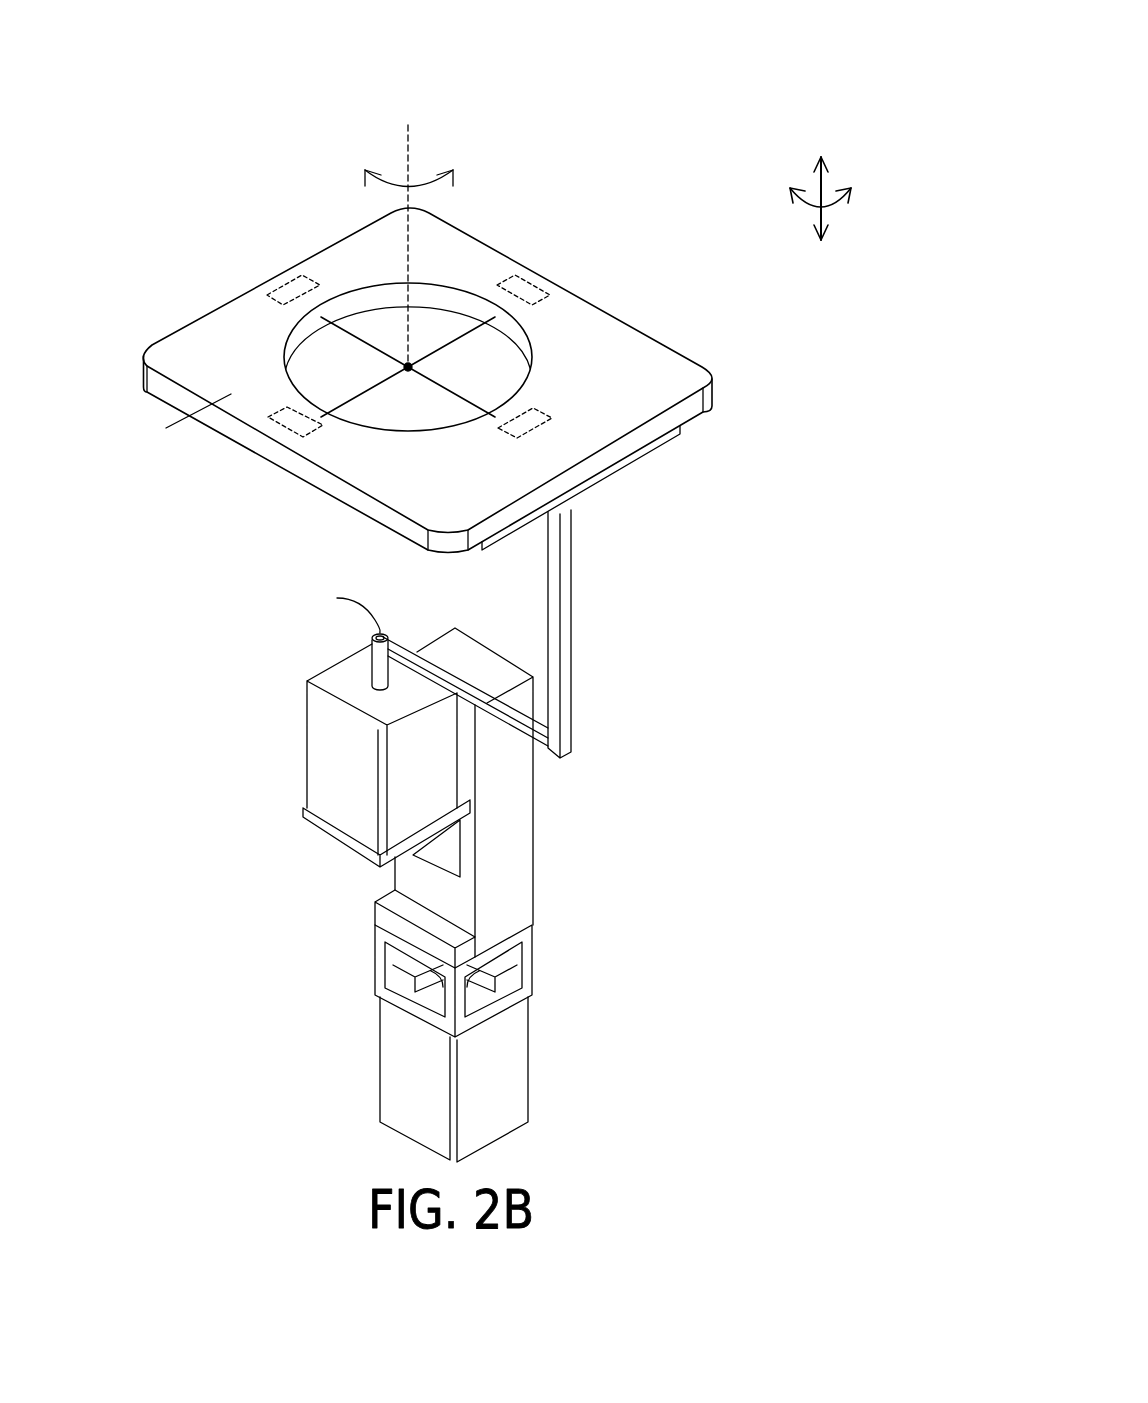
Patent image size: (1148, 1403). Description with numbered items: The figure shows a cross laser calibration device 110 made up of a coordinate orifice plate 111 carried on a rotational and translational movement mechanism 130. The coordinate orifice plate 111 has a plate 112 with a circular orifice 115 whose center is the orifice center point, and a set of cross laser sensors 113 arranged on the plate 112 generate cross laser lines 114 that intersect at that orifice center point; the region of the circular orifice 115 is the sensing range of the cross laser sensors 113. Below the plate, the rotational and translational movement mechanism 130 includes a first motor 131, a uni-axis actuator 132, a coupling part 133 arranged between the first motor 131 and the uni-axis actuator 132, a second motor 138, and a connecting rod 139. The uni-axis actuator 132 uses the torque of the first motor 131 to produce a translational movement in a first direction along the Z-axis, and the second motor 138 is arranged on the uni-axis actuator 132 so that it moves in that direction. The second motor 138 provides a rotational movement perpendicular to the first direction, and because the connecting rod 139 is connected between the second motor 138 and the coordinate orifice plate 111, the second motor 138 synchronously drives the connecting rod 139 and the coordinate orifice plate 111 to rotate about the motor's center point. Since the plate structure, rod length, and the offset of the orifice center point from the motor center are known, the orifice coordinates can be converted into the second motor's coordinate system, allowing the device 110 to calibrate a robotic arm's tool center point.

The cross laser calibration device 110 is at (814, 34).
The coordinate orifice plate 111 is at (652, 310).
The plate 112 is at (667, 388).
The cross laser sensors 113 is at (282, 283).
The cross laser lines 114 is at (355, 355).
The circular orifice 115 is at (283, 358).
The rotational and translational movement mechanism 130 is at (698, 645).
The first motor 131 is at (530, 1060).
The uni-axis actuator 132 is at (515, 843).
The coupling part 133 is at (533, 960).
The second motor 138 is at (343, 753).
The connecting rod 139 is at (512, 710).